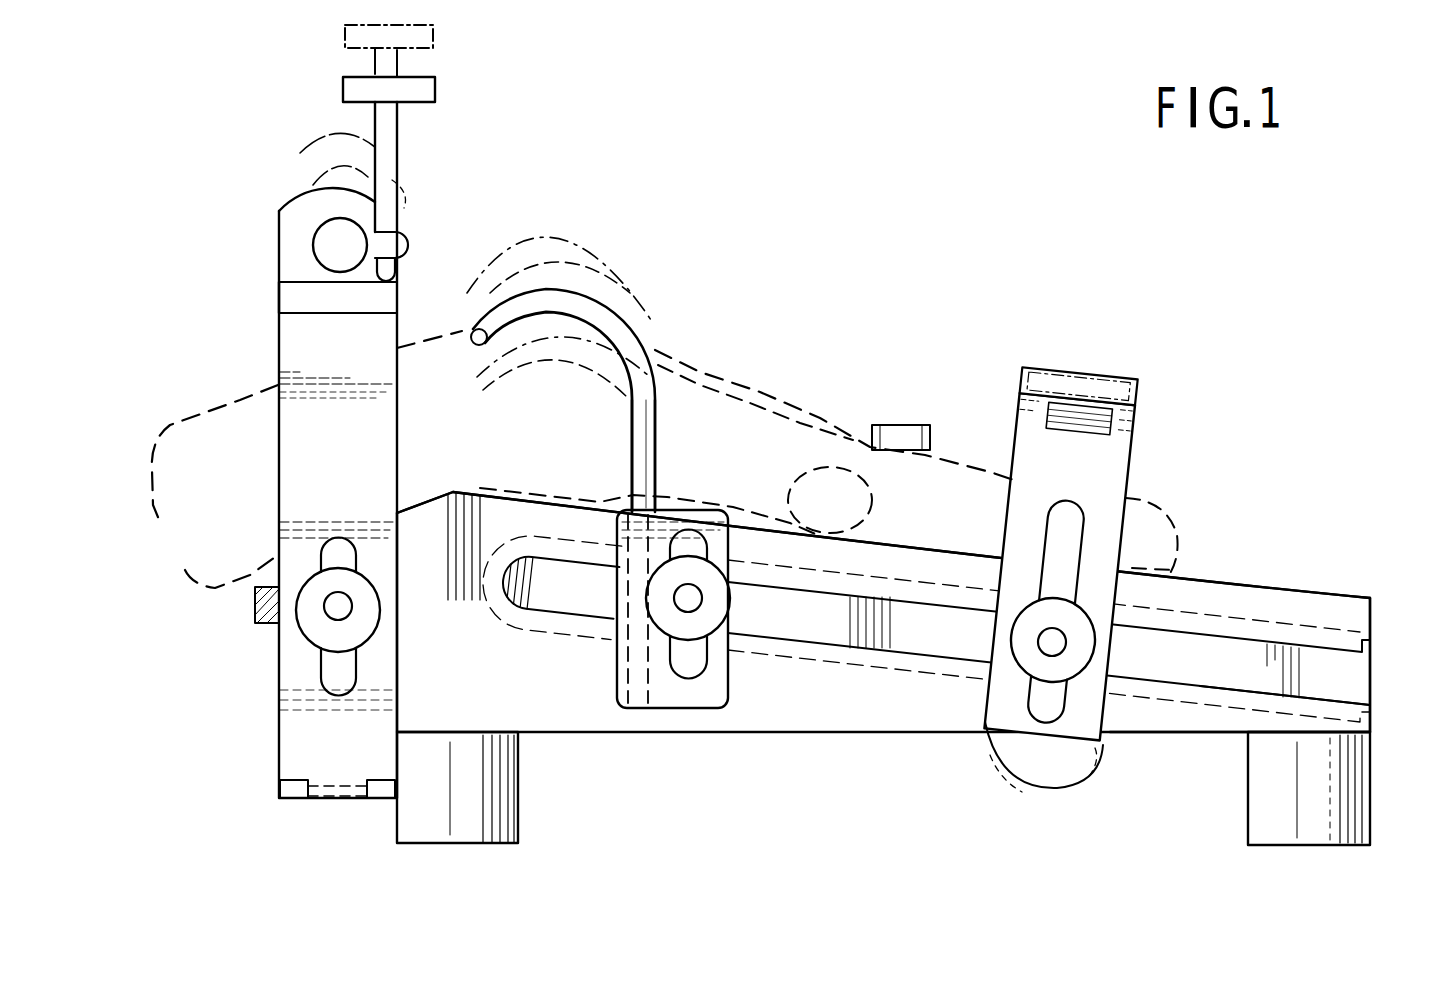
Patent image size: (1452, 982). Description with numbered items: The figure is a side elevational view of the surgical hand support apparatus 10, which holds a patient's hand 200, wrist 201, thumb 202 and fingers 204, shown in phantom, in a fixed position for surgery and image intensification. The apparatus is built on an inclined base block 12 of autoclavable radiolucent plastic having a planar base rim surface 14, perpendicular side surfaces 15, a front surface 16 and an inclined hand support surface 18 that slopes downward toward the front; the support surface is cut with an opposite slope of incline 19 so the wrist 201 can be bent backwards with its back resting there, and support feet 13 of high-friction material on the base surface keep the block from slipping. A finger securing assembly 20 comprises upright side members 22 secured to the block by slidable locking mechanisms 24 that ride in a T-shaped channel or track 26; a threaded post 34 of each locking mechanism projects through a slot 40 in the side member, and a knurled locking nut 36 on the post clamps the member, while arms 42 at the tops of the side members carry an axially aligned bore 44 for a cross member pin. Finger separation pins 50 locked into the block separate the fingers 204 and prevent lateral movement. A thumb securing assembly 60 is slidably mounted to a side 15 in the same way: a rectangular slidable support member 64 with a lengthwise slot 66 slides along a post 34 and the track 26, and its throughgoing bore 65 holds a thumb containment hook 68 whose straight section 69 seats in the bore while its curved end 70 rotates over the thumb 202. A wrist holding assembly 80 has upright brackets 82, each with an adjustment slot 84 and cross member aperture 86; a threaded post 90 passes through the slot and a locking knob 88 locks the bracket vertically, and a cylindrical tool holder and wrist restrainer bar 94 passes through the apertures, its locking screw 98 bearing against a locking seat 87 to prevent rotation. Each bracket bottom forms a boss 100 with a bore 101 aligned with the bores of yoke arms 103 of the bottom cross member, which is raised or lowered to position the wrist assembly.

The surgical hand support apparatus 10 is at (813, 145).
The base block 12 is at (856, 735).
The support feet 13 is at (455, 845).
The planar base rim surface 14 is at (1206, 735).
The side surfaces 15 is at (898, 716).
The front surface 16 is at (1373, 612).
The inclined hand support surface 18 is at (1278, 588).
The slope of incline 19 is at (426, 506).
The finger securing assembly 20 is at (1165, 367).
The upright side members 22 is at (1112, 500).
The slidable locking mechanism 24 is at (1110, 620).
The T-shaped channel or track 26 is at (1372, 681).
The threaded post 34 is at (692, 602).
The knurled locking nut 36 is at (729, 610).
The slots 40 is at (1040, 724).
The arms 42 is at (1138, 412).
The axially aligned bore 44 is at (1136, 442).
The finger separation pins 50 is at (904, 425).
The thumb securing assembly 60 is at (680, 315).
The slidable support member 64 is at (721, 708).
The throughgoing bore 65 is at (640, 708).
The slot 66 is at (689, 680).
The thumb containment hook 68 is at (657, 402).
The straight section 69 is at (646, 650).
The curved end 70 is at (564, 293).
The wrist holding assembly 80 is at (455, 162).
The upright bracket 82 is at (348, 490).
The adjustment slot 84 is at (336, 666).
The cross member aperture 86 is at (325, 246).
The locking seat 87 is at (278, 293).
The locking knob 88 is at (316, 626).
The threaded post 90 is at (342, 608).
The tool holder and wrist restrainer bar 94 is at (326, 237).
The locking screw 98 is at (440, 92).
The boss or end portion 100 is at (322, 799).
The throughgoing bore 101 is at (349, 798).
The yoke arms 103 is at (278, 796).
The hand 200 is at (495, 440).
The wrist 201 is at (243, 496).
The thumb 202 is at (775, 483).
The fingers 204 is at (985, 523).